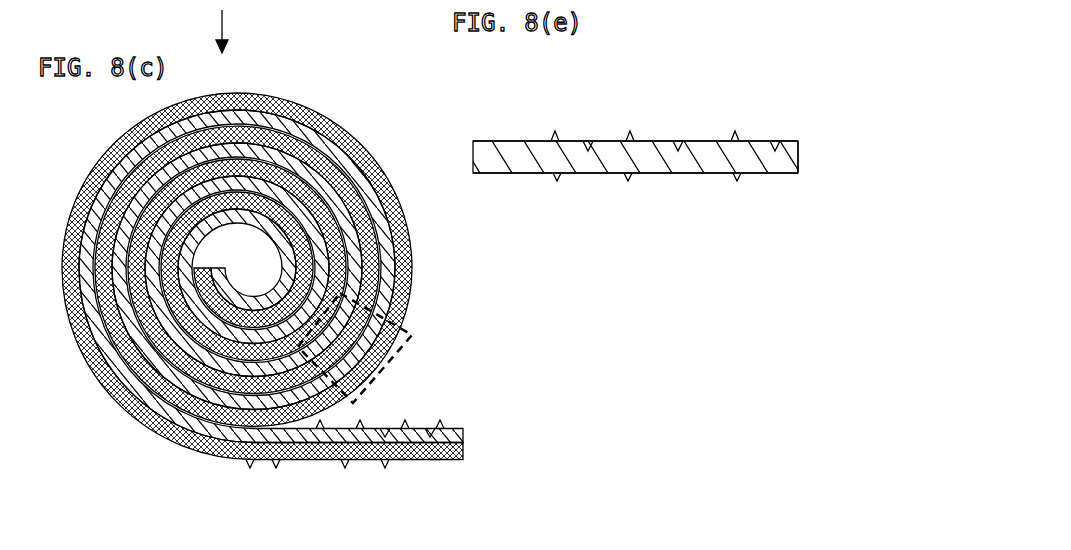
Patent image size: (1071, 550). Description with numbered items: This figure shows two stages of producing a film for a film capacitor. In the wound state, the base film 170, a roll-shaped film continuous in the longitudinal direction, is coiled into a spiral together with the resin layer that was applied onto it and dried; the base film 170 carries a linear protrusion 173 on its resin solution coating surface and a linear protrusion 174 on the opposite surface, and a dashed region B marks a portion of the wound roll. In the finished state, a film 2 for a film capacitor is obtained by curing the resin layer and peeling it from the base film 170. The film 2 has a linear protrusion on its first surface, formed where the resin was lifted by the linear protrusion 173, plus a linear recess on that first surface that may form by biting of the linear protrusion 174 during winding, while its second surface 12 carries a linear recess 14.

The film for a film capacitor 2 is at (511, 123).
The second surface 12 is at (765, 175).
The linear recess 14 is at (735, 173).
The base film 170 is at (410, 265).
The linear protrusion 173 is at (403, 457).
The linear protrusion 174 is at (432, 457).
The enlarged region B is at (367, 348).